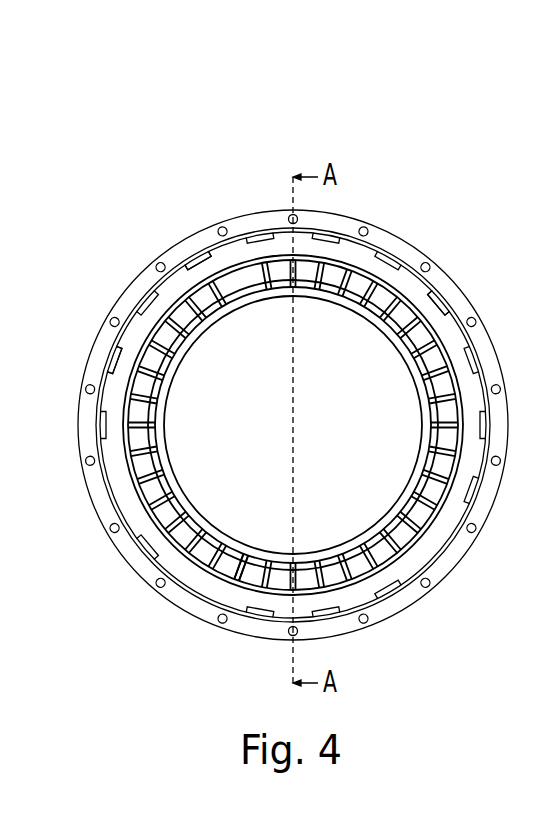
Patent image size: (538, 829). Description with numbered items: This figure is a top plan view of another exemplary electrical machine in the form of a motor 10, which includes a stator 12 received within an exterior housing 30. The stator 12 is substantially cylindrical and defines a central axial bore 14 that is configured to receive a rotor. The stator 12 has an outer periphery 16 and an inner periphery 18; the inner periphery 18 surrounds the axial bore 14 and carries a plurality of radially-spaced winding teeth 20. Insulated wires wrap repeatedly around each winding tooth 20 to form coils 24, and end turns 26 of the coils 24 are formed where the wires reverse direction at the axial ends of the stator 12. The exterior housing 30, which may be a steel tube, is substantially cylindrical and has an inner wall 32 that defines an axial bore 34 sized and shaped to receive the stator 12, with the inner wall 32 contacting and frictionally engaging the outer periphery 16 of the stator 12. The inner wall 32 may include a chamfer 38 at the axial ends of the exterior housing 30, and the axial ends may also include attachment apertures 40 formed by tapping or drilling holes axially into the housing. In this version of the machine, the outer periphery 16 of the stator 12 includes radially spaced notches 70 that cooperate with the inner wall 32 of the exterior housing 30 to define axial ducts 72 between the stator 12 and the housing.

The motor 10 is at (404, 156).
The stator 12 is at (453, 343).
The axial bore 14 is at (220, 480).
The outer periphery 16 is at (225, 250).
The inner periphery 18 is at (385, 290).
The winding teeth 20 is at (178, 298).
The coils 24 is at (227, 570).
The end turns 26 is at (385, 555).
The exterior housing 30 is at (370, 245).
The inner wall 32 is at (130, 345).
The axial bore 34 is at (443, 521).
The chamfer 38 is at (127, 535).
The attachment apertures 40 is at (88, 463).
The notches 70 is at (200, 262).
The axial ducts 72 is at (443, 303).